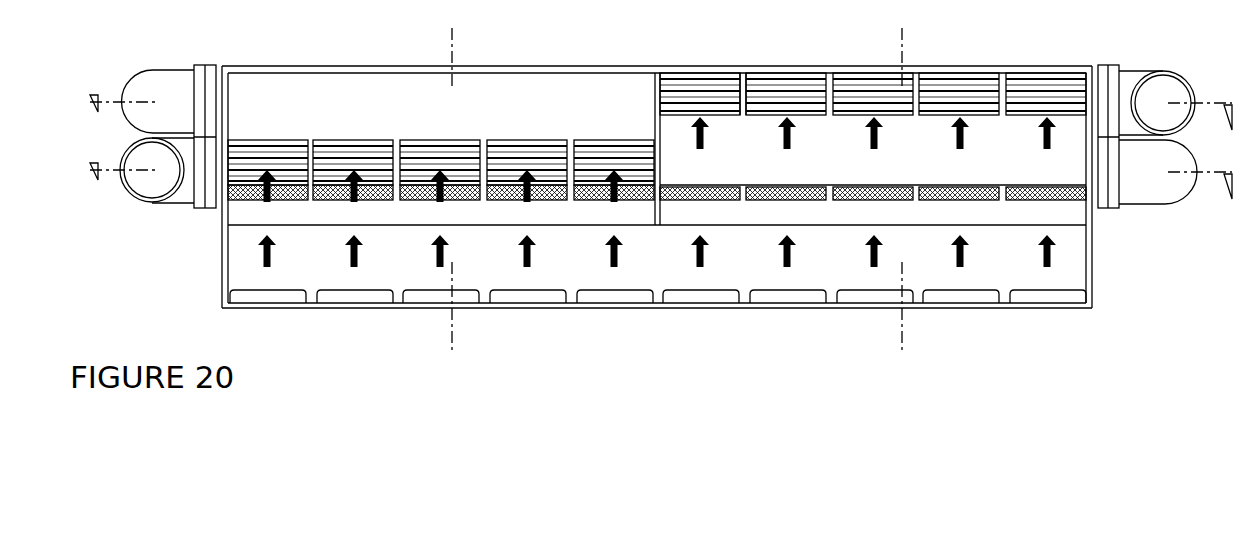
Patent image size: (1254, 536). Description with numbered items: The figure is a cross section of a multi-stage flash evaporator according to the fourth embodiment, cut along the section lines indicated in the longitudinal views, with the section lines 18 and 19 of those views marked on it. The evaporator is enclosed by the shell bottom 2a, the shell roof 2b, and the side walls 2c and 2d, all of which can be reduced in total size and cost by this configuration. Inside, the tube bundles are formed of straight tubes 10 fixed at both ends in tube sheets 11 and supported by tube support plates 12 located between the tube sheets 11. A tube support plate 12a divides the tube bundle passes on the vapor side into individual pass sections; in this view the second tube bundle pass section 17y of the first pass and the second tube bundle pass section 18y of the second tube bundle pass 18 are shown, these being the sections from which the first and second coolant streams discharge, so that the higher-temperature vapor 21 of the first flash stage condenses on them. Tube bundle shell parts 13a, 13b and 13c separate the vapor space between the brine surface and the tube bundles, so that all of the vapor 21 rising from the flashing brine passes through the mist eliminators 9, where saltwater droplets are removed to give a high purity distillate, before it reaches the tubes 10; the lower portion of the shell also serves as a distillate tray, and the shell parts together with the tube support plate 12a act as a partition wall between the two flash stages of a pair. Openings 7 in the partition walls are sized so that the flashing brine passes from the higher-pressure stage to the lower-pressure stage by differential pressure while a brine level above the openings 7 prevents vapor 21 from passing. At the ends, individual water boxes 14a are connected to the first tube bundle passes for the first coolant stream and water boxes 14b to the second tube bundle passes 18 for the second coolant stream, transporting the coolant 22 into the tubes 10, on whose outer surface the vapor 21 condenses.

The shell bottom 2a is at (607, 308).
The shell roof 2b is at (494, 68).
The side wall 2c is at (220, 262).
The side wall 2d is at (1093, 262).
The opening 7 is at (531, 292).
The mist eliminator 9 is at (800, 200).
The straight tube 10 is at (793, 80).
The tube sheet 11 is at (212, 66).
The tube support plate 12 is at (746, 74).
The tube support plate 12a is at (657, 122).
The tube bundle shell part 13a is at (413, 226).
The tube bundle shell part 13b is at (442, 107).
The tube bundle shell part 13c is at (872, 151).
The water box 14a is at (146, 203).
The water box 14b is at (132, 78).
The second tube bundle pass section 17y is at (335, 150).
The second tube bundle pass section 18y is at (948, 82).
The second tube bundle pass 18 is at (430, 30).
The section line 19 is at (878, 30).
The vapor 21 is at (335, 318).
The coolant 22 is at (654, 180).